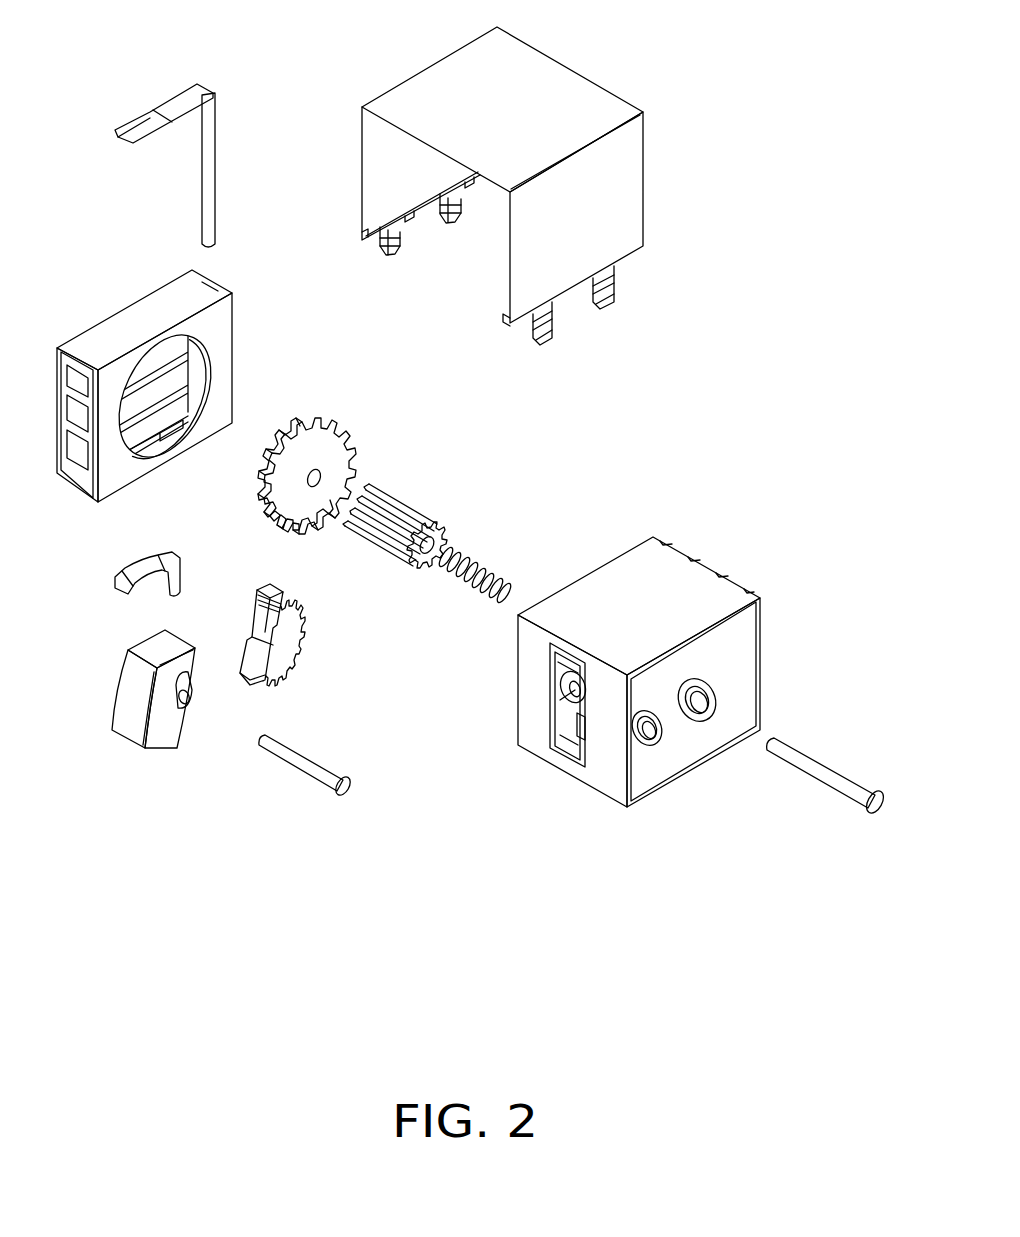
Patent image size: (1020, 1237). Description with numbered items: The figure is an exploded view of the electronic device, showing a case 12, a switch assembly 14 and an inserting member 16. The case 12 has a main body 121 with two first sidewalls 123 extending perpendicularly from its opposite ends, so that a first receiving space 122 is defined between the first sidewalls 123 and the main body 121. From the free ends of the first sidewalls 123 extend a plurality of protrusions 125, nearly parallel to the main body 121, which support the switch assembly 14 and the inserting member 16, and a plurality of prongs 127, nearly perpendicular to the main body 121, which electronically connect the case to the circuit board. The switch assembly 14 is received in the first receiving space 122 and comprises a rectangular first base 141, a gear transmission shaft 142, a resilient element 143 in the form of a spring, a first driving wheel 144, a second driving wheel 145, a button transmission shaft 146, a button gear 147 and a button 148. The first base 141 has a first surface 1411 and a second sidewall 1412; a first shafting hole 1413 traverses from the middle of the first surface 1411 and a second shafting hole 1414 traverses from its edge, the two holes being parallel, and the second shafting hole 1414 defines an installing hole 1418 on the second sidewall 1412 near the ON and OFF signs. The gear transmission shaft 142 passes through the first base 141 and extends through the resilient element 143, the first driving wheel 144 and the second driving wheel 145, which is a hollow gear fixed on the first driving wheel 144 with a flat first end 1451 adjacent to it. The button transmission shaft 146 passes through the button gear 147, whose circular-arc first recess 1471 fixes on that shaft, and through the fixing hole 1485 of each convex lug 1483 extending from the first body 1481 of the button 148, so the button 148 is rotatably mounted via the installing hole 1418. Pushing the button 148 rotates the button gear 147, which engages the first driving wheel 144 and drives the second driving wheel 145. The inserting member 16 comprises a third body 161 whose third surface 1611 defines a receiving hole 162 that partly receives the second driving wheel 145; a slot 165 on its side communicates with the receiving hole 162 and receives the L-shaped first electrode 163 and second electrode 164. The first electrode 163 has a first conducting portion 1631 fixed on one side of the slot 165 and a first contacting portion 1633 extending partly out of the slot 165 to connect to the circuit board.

The case 12 is at (550, 189).
The main body 121 is at (602, 43).
The first receiving space 122 is at (495, 213).
The first sidewalls 123 is at (623, 193).
The protrusions 125 is at (424, 216).
The prongs 127 is at (612, 296).
The switch assembly 14 is at (747, 567).
The first base 141 is at (646, 672).
The first surface 1411 is at (737, 645).
The second sidewall 1412 is at (540, 740).
The first shafting hole 1413 is at (700, 712).
The second shafting hole 1414 is at (648, 735).
The installing hole 1418 is at (577, 768).
The gear transmission shaft 142 is at (836, 790).
The resilient element 143 is at (482, 552).
The first driving wheel 144 is at (405, 510).
The second driving wheel 145 is at (329, 484).
The first end 1451 is at (303, 508).
The button transmission shaft 146 is at (300, 758).
The button gear 147 is at (288, 629).
The first recess 1471 is at (250, 630).
The button 148 is at (143, 729).
The first body 1481 is at (158, 736).
The convex lugs 1483 is at (180, 700).
The fixing hole 1485 is at (192, 702).
The inserting member 16 is at (150, 285).
The third body 161 is at (161, 399).
The third surface 1611 is at (112, 462).
The receiving hole 162 is at (183, 414).
The first electrode 163 is at (127, 146).
The first conducting portion 1631 is at (164, 94).
The first contacting portion 1633 is at (205, 165).
The second electrode 164 is at (117, 572).
The slot 165 is at (62, 458).